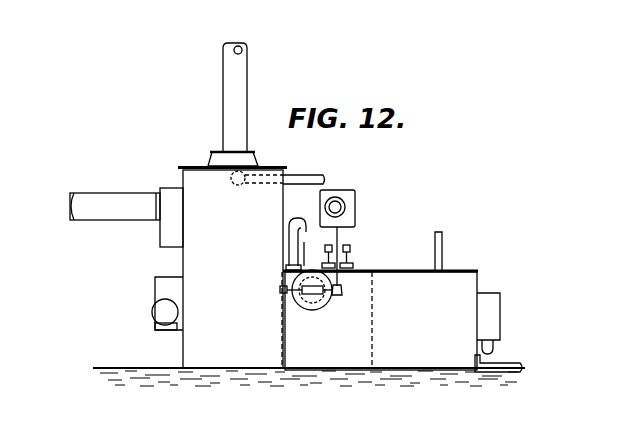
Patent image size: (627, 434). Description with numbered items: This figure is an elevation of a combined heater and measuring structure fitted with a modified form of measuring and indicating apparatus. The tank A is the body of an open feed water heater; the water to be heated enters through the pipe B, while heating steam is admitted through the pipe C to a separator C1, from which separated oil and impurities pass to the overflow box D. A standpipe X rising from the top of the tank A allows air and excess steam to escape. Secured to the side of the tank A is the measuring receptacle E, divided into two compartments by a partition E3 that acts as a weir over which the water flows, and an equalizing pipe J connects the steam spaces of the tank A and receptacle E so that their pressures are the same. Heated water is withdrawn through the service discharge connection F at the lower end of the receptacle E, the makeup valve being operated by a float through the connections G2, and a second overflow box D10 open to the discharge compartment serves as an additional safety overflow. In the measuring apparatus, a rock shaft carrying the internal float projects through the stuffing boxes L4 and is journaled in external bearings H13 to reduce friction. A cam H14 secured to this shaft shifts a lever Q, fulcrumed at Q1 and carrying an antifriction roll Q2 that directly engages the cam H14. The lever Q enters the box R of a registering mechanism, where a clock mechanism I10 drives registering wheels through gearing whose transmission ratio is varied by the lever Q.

The tank A is at (232, 268).
The standpipe X is at (227, 78).
The steam pipe C is at (113, 198).
The separator C1 is at (170, 235).
The overflow box D is at (160, 288).
The water supply pipe B is at (306, 177).
The registering mechanism box R is at (353, 195).
The clock mechanism I10 is at (337, 198).
The equalizing pipe J is at (285, 247).
The external bearings H13 is at (254, 306).
The lever Q is at (343, 242).
The fulcrum Q1 is at (351, 252).
The antifriction roll Q2 is at (342, 290).
The stuffing boxes L4 is at (312, 307).
The measuring receptacle E is at (380, 320).
The partition E3 is at (372, 340).
The float connections G2 is at (443, 246).
The overflow box D10 is at (500, 311).
The service discharge connection F is at (503, 361).
The cam H14 is at (338, 293).